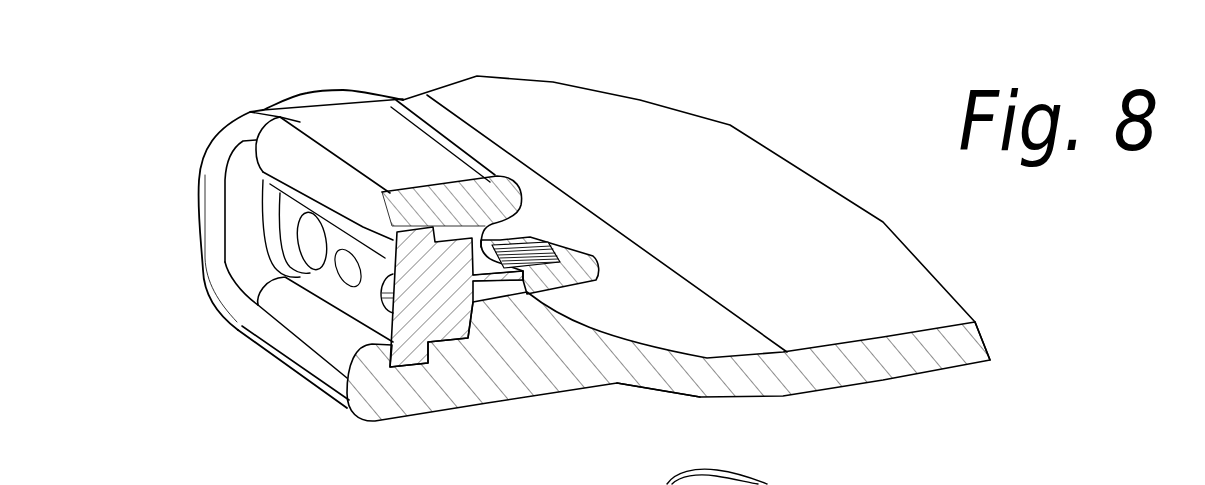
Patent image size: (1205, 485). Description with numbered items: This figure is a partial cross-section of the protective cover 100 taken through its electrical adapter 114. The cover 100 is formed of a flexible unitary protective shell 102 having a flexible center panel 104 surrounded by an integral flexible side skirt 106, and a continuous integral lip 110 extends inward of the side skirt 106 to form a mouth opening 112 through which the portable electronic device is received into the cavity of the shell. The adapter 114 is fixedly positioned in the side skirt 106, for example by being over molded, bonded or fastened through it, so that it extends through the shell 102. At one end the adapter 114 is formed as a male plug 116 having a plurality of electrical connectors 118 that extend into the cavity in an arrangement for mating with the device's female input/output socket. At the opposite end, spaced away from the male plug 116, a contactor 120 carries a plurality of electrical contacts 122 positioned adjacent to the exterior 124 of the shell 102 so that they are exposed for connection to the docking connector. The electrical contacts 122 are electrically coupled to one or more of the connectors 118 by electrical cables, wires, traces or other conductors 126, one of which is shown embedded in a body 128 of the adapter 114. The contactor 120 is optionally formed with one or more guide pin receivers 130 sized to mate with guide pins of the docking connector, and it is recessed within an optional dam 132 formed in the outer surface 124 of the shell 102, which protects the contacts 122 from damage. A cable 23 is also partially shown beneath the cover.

The cable 23 is at (663, 482).
The protective cover 100 is at (783, 397).
The unitary protective shell 102 is at (902, 377).
The center panel 104 is at (755, 162).
The side skirt 106 is at (637, 320).
The lip 110 is at (492, 168).
The mouth opening 112 is at (533, 193).
The adapter 114 is at (406, 368).
The male plug 116 is at (600, 266).
The electrical connectors 118 is at (567, 247).
The contactor 120 is at (372, 317).
The electrical contacts 122 is at (348, 272).
The exterior 124 is at (613, 384).
The electrical conductors 126 is at (448, 290).
The body 128 is at (457, 313).
The guide pin receivers 130 is at (298, 233).
The dam 132 is at (207, 160).